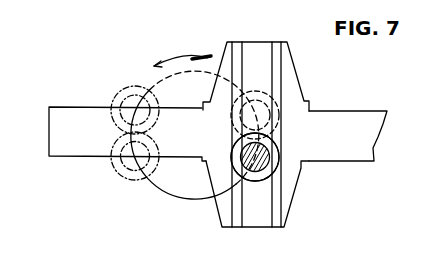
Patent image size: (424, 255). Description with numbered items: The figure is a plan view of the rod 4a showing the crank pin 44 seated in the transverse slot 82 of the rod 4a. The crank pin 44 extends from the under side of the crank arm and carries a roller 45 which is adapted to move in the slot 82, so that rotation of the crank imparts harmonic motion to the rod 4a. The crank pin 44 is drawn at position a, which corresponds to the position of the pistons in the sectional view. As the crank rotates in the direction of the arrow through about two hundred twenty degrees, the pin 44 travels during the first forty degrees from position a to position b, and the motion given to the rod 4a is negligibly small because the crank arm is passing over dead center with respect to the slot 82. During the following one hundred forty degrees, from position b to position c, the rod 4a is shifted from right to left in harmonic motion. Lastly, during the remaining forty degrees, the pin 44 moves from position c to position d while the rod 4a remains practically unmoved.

The transverse slot 82 is at (249, 50).
The rod 4a is at (361, 155).
The position a is at (276, 155).
The position b is at (262, 112).
The position c is at (126, 94).
The position d is at (115, 172).
The crank pin 44 is at (256, 163).
The roller 45 is at (272, 173).